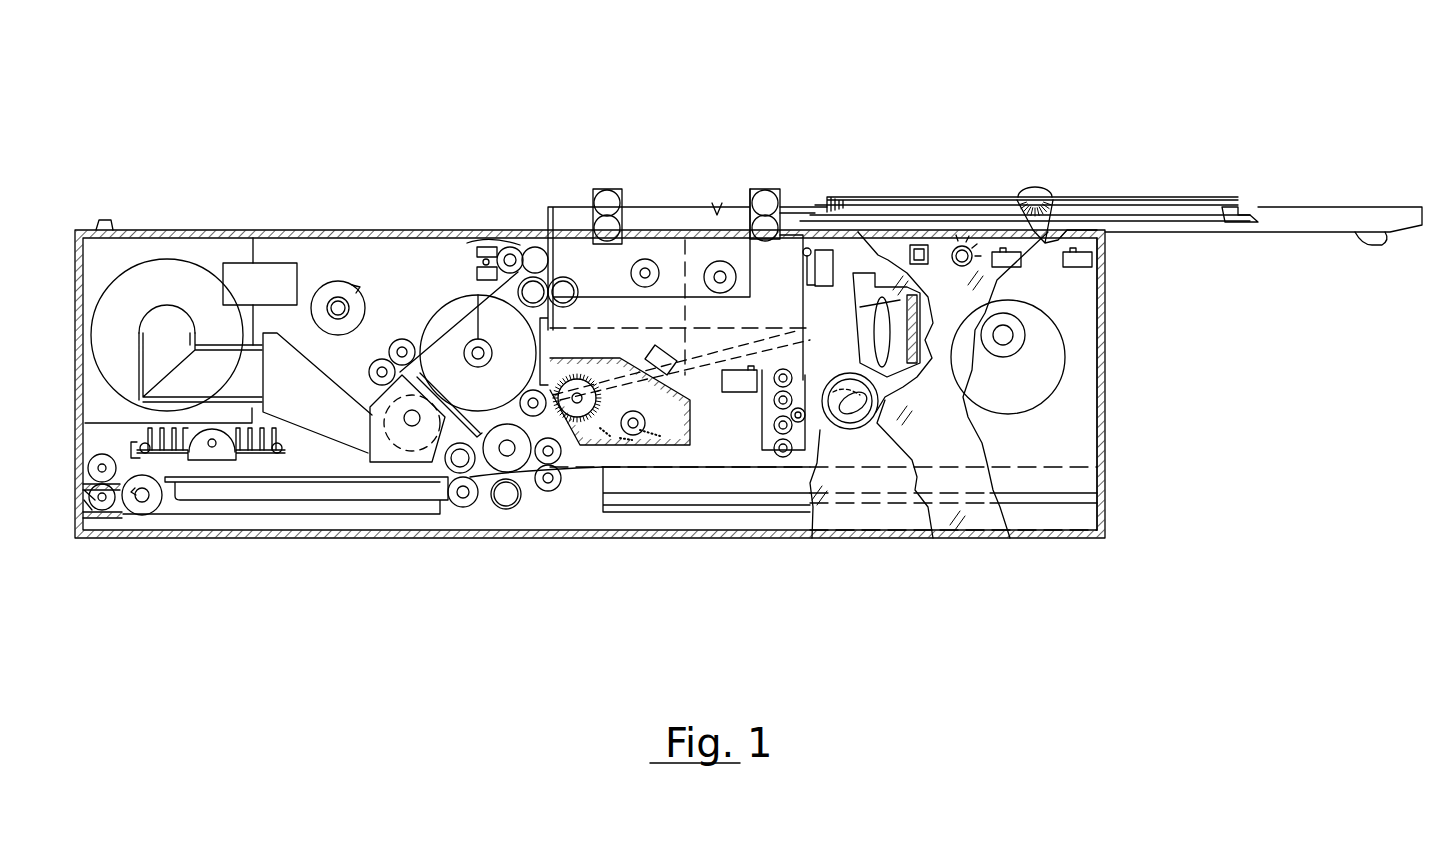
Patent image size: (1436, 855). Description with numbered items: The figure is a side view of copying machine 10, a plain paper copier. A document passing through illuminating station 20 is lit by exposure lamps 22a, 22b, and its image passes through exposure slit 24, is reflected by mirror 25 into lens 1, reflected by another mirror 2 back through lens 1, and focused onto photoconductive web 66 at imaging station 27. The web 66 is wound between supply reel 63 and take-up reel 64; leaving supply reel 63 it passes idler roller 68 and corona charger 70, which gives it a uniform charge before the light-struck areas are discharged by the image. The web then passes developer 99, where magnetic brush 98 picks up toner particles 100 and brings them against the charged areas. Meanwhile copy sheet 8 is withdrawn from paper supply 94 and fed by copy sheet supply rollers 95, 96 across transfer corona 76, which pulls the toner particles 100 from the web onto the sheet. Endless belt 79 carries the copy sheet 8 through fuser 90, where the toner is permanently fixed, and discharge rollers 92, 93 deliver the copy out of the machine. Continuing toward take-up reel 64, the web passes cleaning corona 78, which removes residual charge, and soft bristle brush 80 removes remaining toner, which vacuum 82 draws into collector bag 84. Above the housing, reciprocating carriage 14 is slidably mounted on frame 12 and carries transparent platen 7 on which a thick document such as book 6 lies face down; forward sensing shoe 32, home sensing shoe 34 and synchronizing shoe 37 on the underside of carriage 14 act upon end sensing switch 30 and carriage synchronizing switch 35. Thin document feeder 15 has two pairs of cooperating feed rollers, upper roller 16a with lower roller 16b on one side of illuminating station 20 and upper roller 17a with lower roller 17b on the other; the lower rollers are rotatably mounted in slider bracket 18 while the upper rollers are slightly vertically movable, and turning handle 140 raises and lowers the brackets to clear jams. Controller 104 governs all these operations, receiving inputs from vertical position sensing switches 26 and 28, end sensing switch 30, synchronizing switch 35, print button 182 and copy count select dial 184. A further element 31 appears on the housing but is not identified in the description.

The copying machine 10 is at (420, 178).
The thin document feeder 15 is at (853, 130).
The switch 31 is at (112, 218).
The collector bag 84 is at (200, 265).
The controller 104 is at (280, 297).
The corona charger 70 is at (505, 245).
The idler roller 68 is at (533, 247).
The photoconductive web 66 is at (468, 290).
The take-up reel 64 is at (352, 290).
The supply reel 63 is at (450, 320).
The vacuum 82 is at (312, 375).
The soft bristle brush 80 is at (404, 456).
The discharge roller 92 is at (92, 460).
The fuser 90 is at (285, 447).
The discharge roller 93 is at (105, 505).
The endless belt 79 is at (395, 507).
The cleaning corona 78 is at (450, 470).
The transfer corona 76 is at (520, 470).
The copy sheet 8 is at (500, 505).
The copy sheet supply roller 95 is at (550, 465).
The copy sheet supply roller 96 is at (538, 415).
The toner particles 100 is at (550, 490).
The paper supply 94 is at (740, 490).
The upper feed roller 17a is at (607, 190).
The lower feed roller 17b is at (594, 228).
The exposure slit 24 is at (685, 232).
The illuminating station 20 is at (717, 213).
The upper feed roller 16a is at (768, 190).
The lower feed roller 16b is at (752, 228).
The slider bracket 18 is at (822, 250).
The vertical position sensing switch 26 is at (826, 252).
The copy count select dial 184 is at (958, 245).
The print button 182 is at (918, 242).
The home sensing shoe 34 is at (1030, 195).
The end sensing switch 30 is at (1005, 250).
The book 6 is at (1065, 195).
The synchronizing shoe 37 is at (1108, 195).
The transparent platen 7 is at (1240, 205).
The reciprocating carriage 14 is at (1290, 205).
The frame 12 is at (1102, 250).
The carriage synchronizing switch 35 is at (1102, 290).
The forward sensing shoe 32 is at (1378, 245).
The exposure lamp 22b is at (638, 260).
The exposure lamp 22a is at (728, 290).
The imaging station 27 is at (560, 326).
The magnetic brush 98 is at (586, 378).
The mirror 25 is at (660, 395).
The mirror 2 is at (905, 300).
The lens 1 is at (875, 312).
The vertical position sensing switch 28 is at (730, 392).
The developer 99 is at (730, 410).
The handle 140 is at (875, 415).